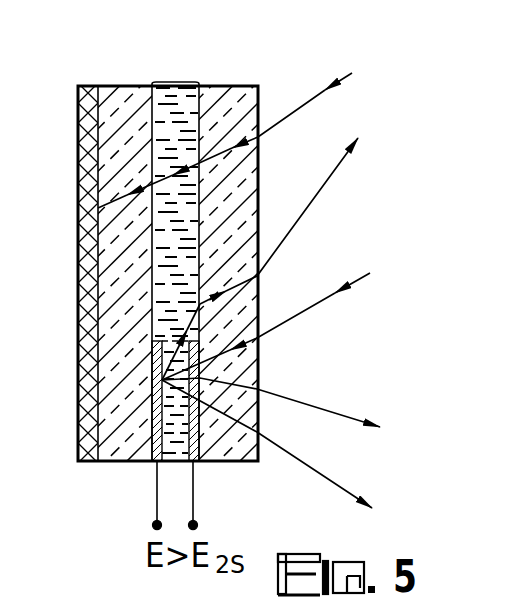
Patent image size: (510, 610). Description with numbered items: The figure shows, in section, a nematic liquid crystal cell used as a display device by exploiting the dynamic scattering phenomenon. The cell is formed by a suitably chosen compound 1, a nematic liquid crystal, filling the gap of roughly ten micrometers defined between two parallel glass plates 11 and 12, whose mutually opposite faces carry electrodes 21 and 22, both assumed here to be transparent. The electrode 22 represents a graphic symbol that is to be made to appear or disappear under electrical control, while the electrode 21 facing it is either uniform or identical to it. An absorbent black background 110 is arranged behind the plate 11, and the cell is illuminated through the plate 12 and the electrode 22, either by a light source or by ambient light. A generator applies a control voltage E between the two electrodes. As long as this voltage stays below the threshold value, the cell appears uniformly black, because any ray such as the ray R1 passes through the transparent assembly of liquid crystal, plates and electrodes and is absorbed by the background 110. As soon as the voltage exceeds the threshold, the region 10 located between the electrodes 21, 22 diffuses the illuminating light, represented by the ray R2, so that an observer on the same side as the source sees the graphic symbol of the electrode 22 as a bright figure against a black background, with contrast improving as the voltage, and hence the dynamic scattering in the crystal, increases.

The absorbent black background 110 is at (80, 103).
The glass plate 11 is at (128, 102).
The compound 1 is at (184, 102).
The glass plate 12 is at (237, 102).
The electrode 21 is at (152, 424).
The electrode 22 is at (200, 430).
The region between the electrodes 10 is at (175, 436).
The ray R1 is at (239, 213).
The ray R2 is at (284, 383).